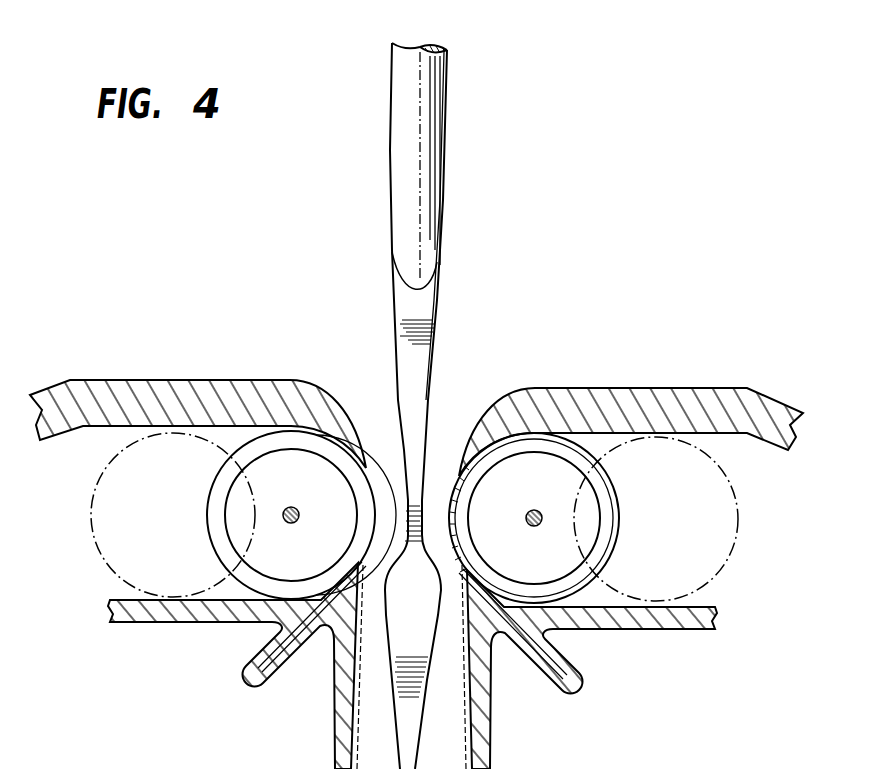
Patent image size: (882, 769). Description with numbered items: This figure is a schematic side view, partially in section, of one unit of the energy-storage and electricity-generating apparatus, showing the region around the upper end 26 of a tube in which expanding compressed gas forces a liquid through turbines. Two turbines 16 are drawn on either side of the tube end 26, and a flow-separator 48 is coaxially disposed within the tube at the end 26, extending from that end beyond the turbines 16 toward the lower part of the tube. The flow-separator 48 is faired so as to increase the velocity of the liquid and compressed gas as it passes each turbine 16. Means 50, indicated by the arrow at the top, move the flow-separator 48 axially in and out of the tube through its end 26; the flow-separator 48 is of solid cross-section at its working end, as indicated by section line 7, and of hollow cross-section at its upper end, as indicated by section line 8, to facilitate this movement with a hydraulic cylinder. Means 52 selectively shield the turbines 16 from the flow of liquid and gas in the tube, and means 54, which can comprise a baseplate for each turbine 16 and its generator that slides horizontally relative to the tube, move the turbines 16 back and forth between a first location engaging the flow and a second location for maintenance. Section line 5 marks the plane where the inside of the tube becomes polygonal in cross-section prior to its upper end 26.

The section line 5- 5 is at (312, 688).
The section line 7- 7 is at (360, 272).
The section line 8- 8 is at (372, 99).
The turbine 16 is at (254, 440).
The upper end of the tube 26 is at (455, 410).
The flow-separator 48 is at (444, 205).
The means for moving the flow-separator 50 is at (417, 14).
The means for selectively shielding the turbines 52 is at (457, 484).
The means for moving the turbines 54 is at (193, 513).